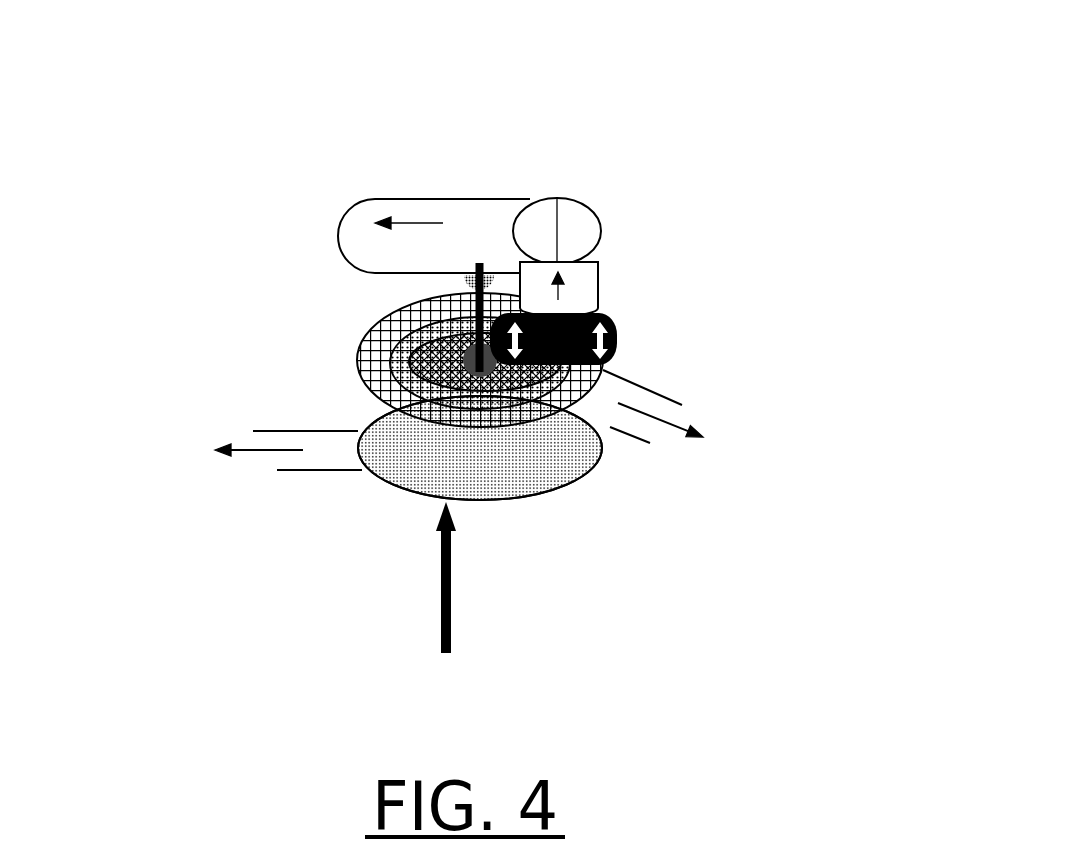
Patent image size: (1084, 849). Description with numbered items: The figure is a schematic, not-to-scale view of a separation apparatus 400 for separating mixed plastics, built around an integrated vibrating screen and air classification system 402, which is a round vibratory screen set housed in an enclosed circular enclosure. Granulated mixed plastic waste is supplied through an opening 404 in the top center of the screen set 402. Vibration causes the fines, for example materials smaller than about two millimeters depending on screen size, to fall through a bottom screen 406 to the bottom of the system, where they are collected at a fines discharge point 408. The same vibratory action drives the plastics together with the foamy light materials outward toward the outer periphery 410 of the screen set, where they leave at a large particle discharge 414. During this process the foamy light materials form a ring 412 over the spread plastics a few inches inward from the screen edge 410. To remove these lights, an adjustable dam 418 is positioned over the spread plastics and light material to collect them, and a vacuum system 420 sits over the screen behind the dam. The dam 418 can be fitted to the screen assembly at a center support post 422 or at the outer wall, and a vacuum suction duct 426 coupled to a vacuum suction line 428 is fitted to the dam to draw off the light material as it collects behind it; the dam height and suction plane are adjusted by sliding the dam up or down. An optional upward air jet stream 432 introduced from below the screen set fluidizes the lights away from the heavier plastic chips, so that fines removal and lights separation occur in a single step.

The separation apparatus 400 is at (595, 30).
The integrated vibrating screen and air classification system 402 is at (411, 508).
The opening 404 is at (503, 368).
The bottom screen 406 is at (488, 481).
The fines discharge point 408 is at (227, 472).
The outer periphery 410 is at (397, 309).
The ring 412 is at (357, 362).
The large particle discharge 414 is at (775, 424).
The adjustable dam 418 is at (605, 322).
The vacuum system 420 is at (743, 102).
The center support post 422 is at (475, 277).
The vacuum suction duct 426 is at (598, 310).
The vacuum suction line 428 is at (532, 222).
The upward air jet stream 432 is at (432, 612).